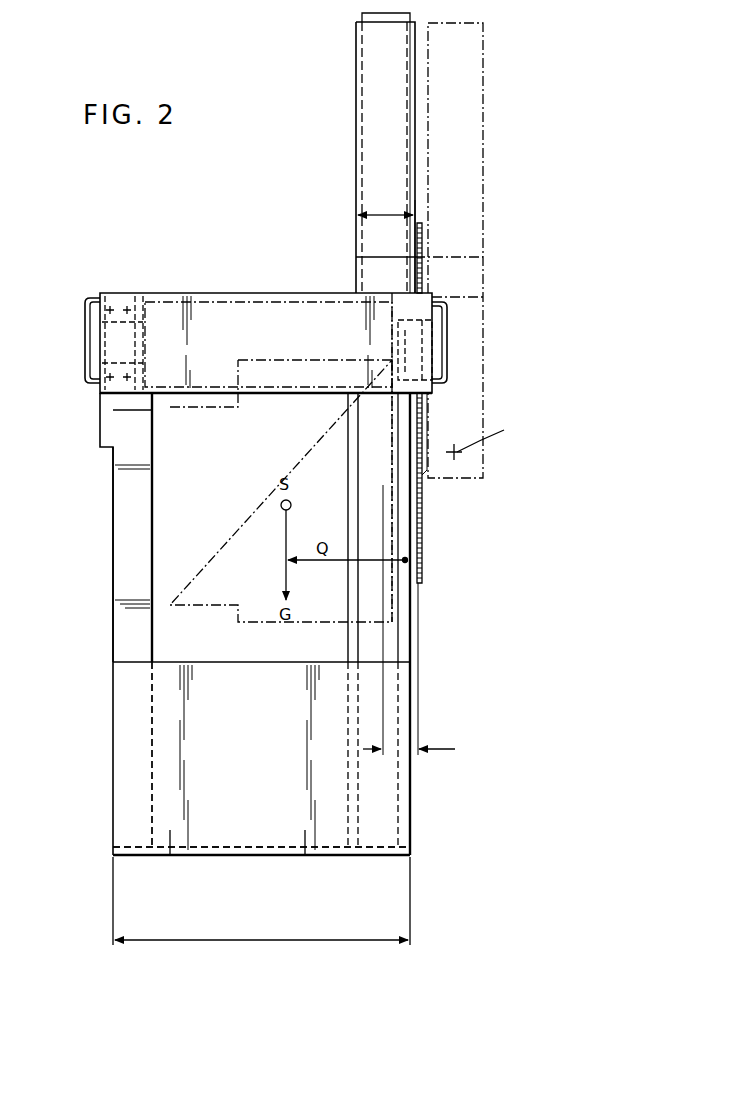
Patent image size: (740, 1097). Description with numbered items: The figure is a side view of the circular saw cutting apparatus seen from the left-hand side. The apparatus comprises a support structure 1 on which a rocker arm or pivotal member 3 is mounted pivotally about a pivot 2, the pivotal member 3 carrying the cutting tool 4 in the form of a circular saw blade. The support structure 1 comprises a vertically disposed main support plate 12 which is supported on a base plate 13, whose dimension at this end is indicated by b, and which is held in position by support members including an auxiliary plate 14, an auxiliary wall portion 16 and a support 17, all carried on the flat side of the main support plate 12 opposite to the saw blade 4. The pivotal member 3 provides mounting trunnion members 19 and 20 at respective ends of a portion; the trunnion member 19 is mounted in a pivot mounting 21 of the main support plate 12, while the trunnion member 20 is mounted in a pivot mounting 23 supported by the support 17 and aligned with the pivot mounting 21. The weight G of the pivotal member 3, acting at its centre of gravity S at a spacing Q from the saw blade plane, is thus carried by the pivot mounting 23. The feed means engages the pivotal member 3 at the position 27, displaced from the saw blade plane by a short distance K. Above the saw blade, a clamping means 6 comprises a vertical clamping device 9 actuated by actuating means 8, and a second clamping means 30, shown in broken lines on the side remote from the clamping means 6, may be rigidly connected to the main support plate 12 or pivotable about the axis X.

The support structure 1 is at (524, 726).
The pivot 2 is at (415, 343).
The pivotal member 3 is at (202, 618).
The cutting tool 4 is at (425, 548).
The clamping means 6 is at (326, 78).
The actuating means 8 is at (370, 136).
The vertical clamping device 9 is at (370, 263).
The main support plate 12 is at (405, 636).
The base plate 13 is at (125, 848).
The auxiliary plate 14 is at (165, 745).
The auxiliary wall portion 16 is at (355, 605).
The support 17 is at (125, 492).
The mounting trunnion member 19 is at (440, 304).
The mounting trunnion member 20 is at (88, 333).
The pivot mounting 21 is at (410, 355).
The pivot mounting 23 is at (118, 300).
The engagement position 27 is at (383, 682).
The second clamping means 30 is at (520, 186).